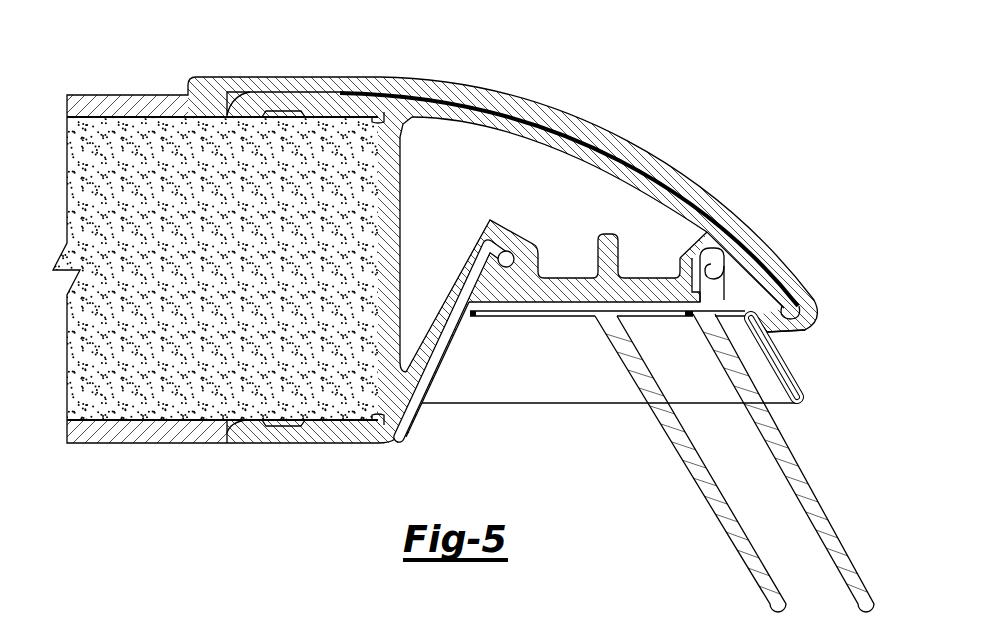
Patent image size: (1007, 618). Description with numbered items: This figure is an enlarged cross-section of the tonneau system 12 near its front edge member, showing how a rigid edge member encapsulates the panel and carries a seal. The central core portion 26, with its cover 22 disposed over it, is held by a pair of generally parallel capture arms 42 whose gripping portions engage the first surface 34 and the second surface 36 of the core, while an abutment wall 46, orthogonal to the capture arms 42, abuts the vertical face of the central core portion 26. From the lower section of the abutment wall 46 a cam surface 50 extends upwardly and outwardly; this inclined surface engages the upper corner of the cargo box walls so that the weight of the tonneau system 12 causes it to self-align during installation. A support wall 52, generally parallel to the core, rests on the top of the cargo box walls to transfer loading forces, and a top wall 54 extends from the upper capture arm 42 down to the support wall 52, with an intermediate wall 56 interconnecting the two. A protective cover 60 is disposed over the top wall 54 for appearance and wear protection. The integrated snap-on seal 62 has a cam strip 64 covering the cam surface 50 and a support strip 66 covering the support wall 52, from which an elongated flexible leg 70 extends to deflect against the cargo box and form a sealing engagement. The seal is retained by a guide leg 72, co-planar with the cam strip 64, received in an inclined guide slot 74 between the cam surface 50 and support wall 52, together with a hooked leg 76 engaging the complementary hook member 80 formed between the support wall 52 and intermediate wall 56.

The tonneau system 12 is at (487, 52).
The cover 22 is at (134, 106).
The central core portion 26 is at (97, 188).
The first surface 34 is at (82, 108).
The second surface 36 is at (104, 428).
The capture arms 42 is at (305, 107).
The abutment wall 46 is at (388, 188).
The cam surface 50 is at (440, 345).
The support wall 52 is at (548, 302).
The top wall 54 is at (660, 182).
The intermediate wall 56 is at (698, 258).
The protective cover 60 is at (597, 128).
The snap-on seal 62 is at (672, 461).
The cam strip 64 is at (410, 436).
The support strip 66 is at (571, 292).
The flexible leg 70 is at (777, 445).
The guide leg 72 is at (487, 282).
The guide slot 74 is at (493, 224).
The hooked leg 76 is at (718, 289).
The hook member 80 is at (712, 281).